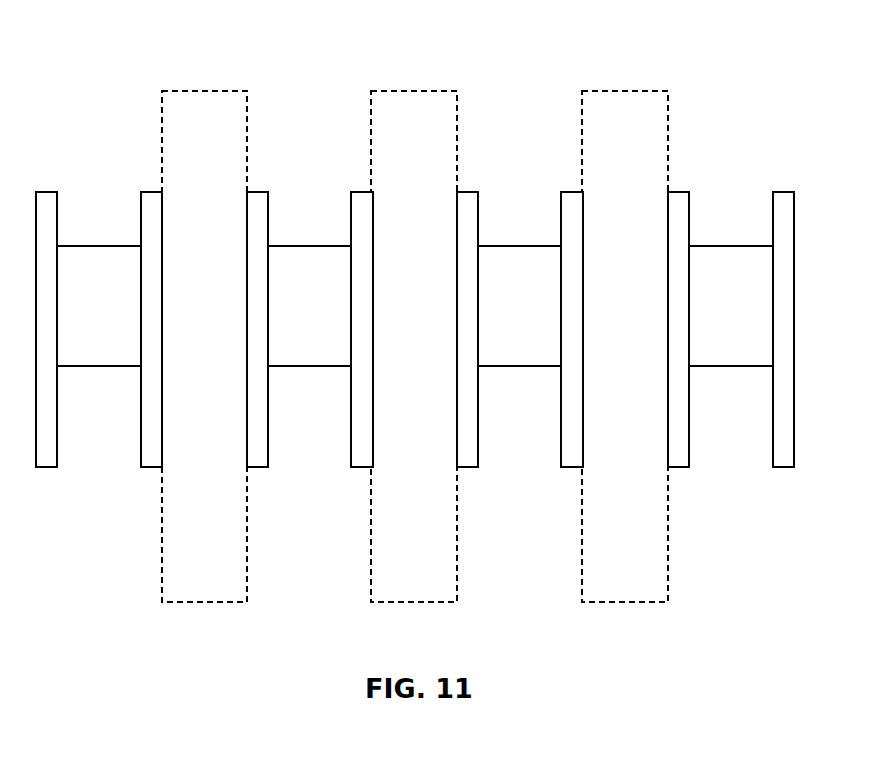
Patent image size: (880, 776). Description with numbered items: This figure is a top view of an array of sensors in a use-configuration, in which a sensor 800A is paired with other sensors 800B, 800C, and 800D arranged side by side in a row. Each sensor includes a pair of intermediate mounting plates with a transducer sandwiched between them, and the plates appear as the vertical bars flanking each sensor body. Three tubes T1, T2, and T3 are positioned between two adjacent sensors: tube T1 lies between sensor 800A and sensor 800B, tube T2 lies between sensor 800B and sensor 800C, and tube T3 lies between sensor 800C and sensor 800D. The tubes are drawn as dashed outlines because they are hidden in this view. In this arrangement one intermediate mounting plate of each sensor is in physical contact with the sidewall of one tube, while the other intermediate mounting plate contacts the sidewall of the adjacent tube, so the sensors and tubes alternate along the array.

The sensor 800A is at (99, 234).
The sensor 800B is at (274, 239).
The sensor 800C is at (520, 224).
The sensor 800D is at (731, 233).
The tube T1 is at (188, 534).
The tube T2 is at (431, 534).
The tube T3 is at (608, 534).